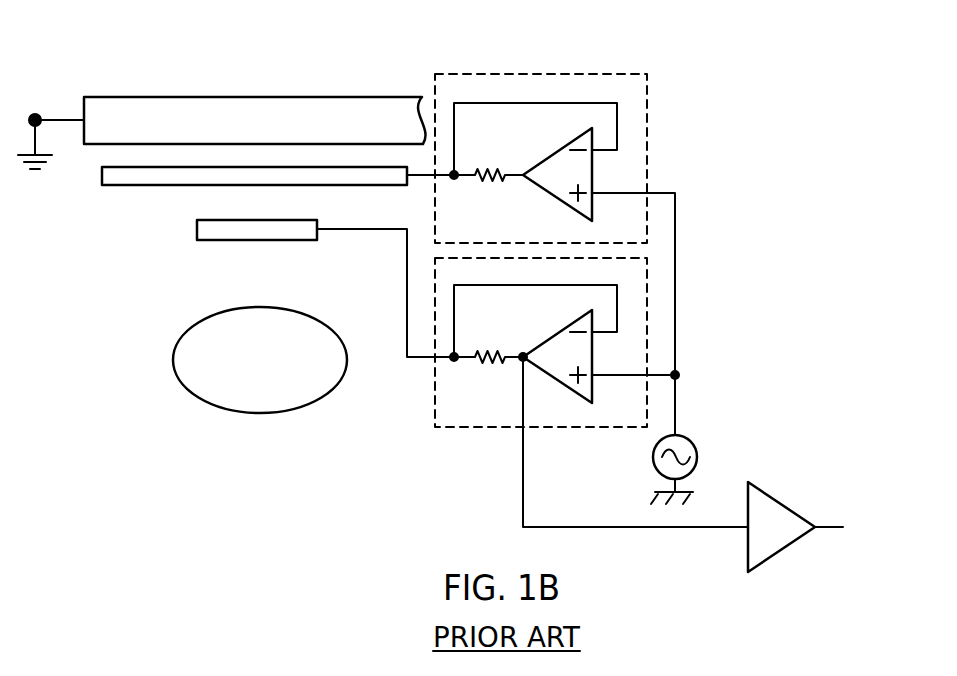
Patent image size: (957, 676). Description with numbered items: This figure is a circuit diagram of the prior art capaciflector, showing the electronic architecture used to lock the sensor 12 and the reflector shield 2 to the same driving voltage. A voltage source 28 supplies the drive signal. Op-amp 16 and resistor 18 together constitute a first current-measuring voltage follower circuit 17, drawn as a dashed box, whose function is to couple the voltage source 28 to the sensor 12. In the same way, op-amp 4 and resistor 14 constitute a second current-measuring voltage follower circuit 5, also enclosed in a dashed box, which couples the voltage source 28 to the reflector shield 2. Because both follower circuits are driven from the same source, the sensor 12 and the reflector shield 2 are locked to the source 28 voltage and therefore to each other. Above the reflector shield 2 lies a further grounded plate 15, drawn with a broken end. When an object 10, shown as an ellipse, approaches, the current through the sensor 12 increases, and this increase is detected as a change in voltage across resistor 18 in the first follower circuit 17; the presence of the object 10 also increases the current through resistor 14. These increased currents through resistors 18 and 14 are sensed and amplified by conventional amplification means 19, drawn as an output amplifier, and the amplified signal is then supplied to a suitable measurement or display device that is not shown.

The driven shield electrode 15 is at (320, 96).
The reflector shield 2 is at (132, 187).
The sensor 12 is at (278, 242).
The object 10 is at (197, 400).
The second current-measuring voltage follower circuit 5 is at (647, 104).
The resistor 14 is at (491, 172).
The op-amp 4 is at (563, 145).
The first current-measuring voltage follower circuit 17 is at (647, 280).
The resistor 18 is at (477, 358).
The op-amp 16 is at (582, 393).
The voltage source 28 is at (686, 436).
The amplification means 19 is at (778, 498).